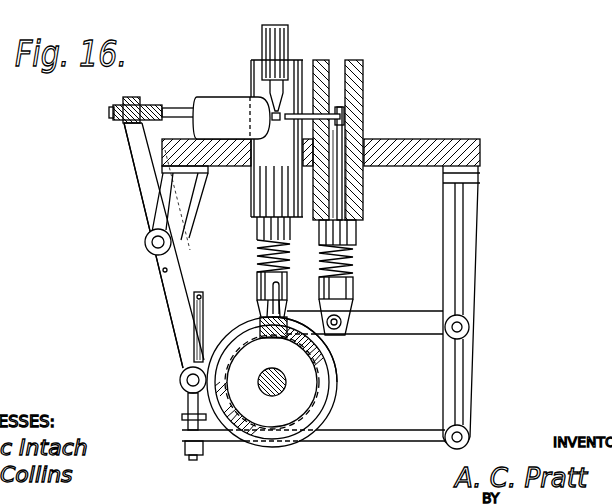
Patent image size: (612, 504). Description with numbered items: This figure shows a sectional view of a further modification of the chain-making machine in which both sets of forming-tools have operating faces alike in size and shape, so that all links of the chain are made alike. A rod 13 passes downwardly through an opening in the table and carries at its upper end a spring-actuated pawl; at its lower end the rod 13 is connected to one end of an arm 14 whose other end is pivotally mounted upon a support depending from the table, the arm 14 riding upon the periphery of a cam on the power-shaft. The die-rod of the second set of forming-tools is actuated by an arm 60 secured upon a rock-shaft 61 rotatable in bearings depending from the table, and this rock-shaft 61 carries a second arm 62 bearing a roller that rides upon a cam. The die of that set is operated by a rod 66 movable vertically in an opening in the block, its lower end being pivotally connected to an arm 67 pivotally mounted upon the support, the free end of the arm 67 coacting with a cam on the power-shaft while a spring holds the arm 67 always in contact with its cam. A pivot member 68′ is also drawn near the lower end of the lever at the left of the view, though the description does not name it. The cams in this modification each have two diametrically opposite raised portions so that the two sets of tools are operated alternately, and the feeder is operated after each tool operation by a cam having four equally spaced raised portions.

The arm 60 is at (137, 172).
The rock-shaft 61 is at (146, 241).
The arm 62 is at (273, 285).
The rod 13 is at (205, 293).
The pivot bracket 68′ is at (227, 403).
The rod 66 is at (357, 227).
The arm 67 is at (401, 320).
The arm 14 is at (381, 443).